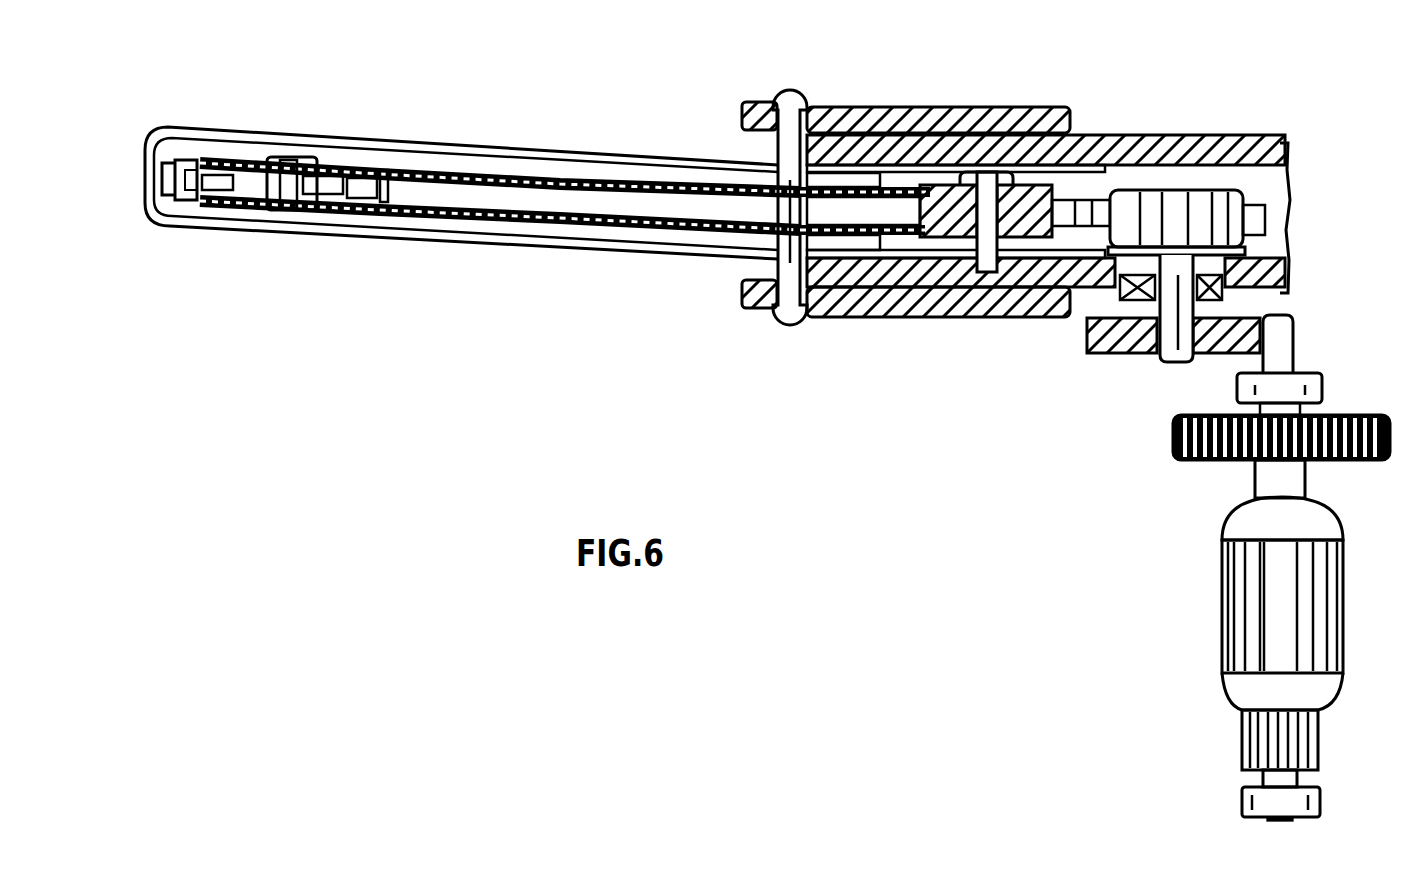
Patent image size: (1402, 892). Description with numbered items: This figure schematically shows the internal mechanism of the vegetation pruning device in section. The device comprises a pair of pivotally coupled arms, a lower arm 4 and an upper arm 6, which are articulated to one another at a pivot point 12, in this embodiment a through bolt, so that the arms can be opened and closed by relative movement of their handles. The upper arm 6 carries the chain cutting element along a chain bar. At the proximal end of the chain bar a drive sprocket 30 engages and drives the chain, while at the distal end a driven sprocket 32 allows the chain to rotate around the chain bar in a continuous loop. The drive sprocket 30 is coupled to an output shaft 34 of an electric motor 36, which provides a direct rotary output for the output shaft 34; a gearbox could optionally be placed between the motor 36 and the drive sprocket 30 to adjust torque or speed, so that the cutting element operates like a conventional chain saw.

The lower arm 4 is at (948, 75).
The upper arm 6 is at (322, 265).
The pivot point 12 is at (787, 148).
The drive sprocket 30 is at (1222, 200).
The driven sprocket 32 is at (327, 172).
The output shaft 34 is at (1296, 322).
The electric motor 36 is at (1253, 600).